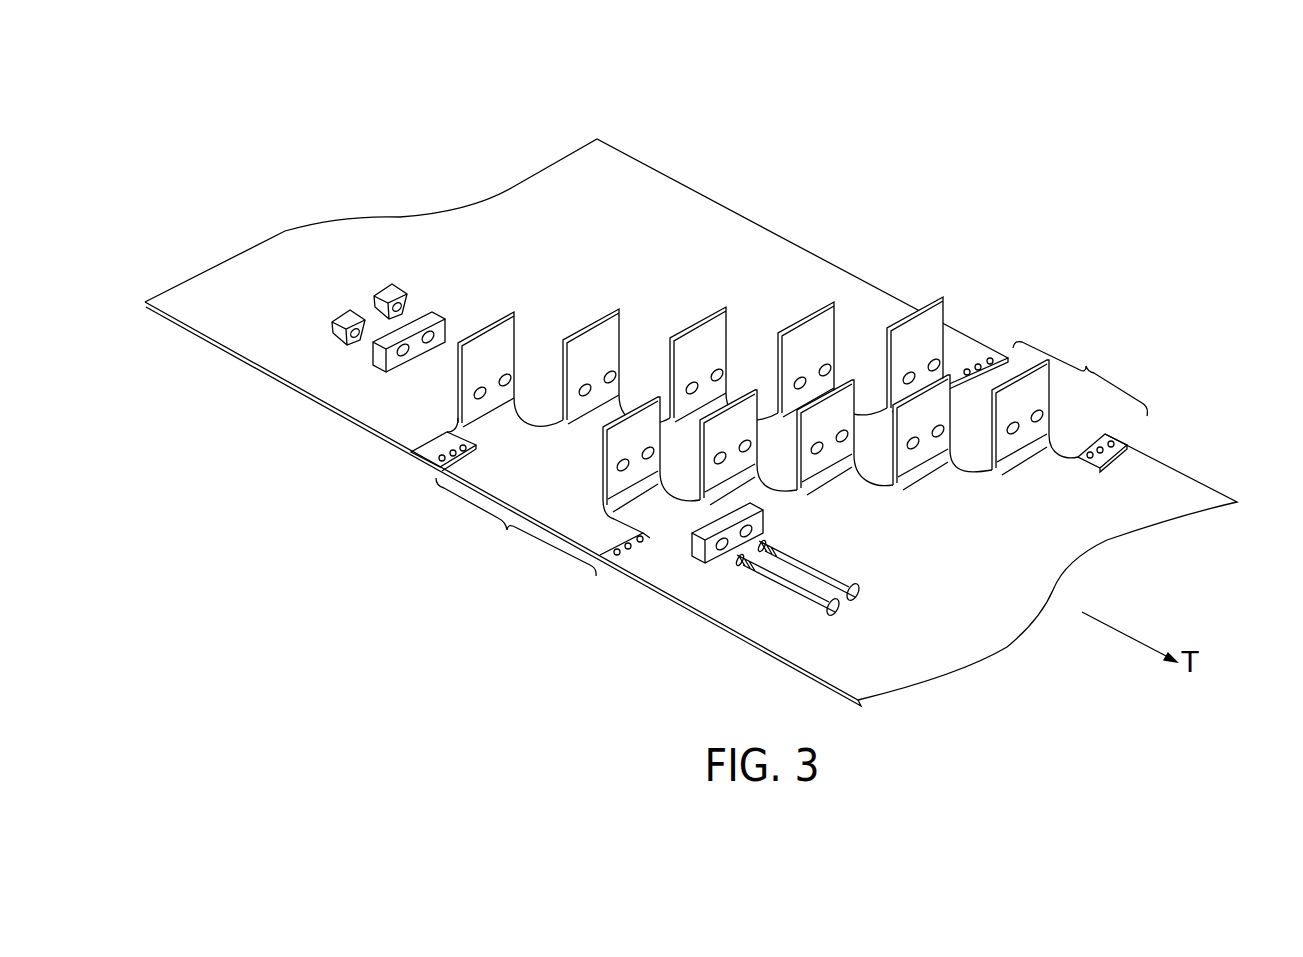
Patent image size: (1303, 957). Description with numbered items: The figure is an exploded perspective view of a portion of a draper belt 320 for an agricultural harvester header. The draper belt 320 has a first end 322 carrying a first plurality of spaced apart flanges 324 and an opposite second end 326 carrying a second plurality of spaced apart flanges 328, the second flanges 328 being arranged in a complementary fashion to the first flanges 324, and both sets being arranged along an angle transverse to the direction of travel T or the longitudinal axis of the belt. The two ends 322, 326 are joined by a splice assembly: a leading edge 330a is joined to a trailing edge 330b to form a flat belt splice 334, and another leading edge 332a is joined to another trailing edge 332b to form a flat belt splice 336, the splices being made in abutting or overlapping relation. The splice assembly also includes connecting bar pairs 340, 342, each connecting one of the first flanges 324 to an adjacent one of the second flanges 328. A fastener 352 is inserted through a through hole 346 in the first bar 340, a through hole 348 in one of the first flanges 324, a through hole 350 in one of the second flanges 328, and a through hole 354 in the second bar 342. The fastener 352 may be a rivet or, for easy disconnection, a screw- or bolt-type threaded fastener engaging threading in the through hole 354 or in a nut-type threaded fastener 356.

The draper belt 320 is at (482, 130).
The first end 322 is at (1217, 472).
The first plurality of spaced apart flanges 324 is at (610, 447).
The second end 326 is at (842, 238).
The second plurality of spaced apart flanges 328 is at (500, 348).
The leading edge 330a is at (637, 580).
The trailing edge 330b is at (433, 460).
The leading edge 332a is at (1148, 452).
The trailing edge 332b is at (978, 342).
The flat belt splice 334 is at (516, 527).
The flat belt splice 336 is at (1080, 372).
The first bar 340 is at (698, 562).
The second bar 342 is at (375, 353).
The through hole 346 is at (758, 533).
The through hole 348 is at (626, 468).
The through hole 350 is at (482, 398).
The fastener 352 is at (778, 577).
The through hole 354 is at (435, 320).
The nut-type threaded fastener 356 is at (348, 315).